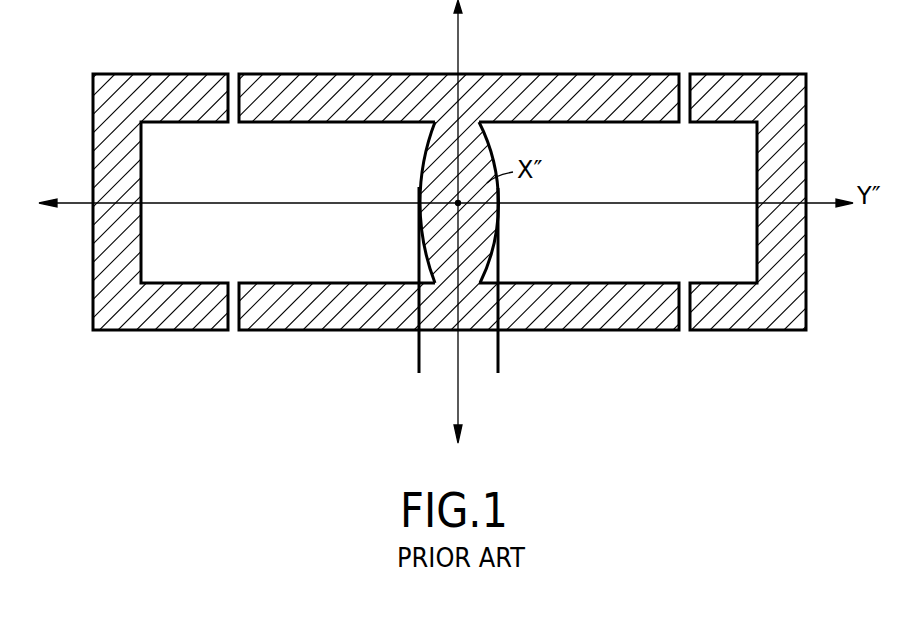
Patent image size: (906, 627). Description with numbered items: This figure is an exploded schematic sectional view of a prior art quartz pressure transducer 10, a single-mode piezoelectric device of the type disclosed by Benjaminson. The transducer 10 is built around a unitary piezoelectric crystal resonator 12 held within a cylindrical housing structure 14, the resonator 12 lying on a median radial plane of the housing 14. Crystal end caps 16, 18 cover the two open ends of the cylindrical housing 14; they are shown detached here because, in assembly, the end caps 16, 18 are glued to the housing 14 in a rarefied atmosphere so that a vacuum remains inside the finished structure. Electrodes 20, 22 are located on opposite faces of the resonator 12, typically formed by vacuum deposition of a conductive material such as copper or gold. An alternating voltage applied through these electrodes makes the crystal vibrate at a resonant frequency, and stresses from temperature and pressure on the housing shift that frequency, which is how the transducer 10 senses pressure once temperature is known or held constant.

The transducer 10 is at (215, 400).
The unitary piezoelectric crystal resonator 12 is at (435, 175).
The cylindrical housing structure 14 is at (303, 93).
The crystal end cap 16 is at (102, 278).
The crystal end cap 18 is at (797, 275).
The electrode 20 is at (417, 357).
The electrode 22 is at (500, 353).